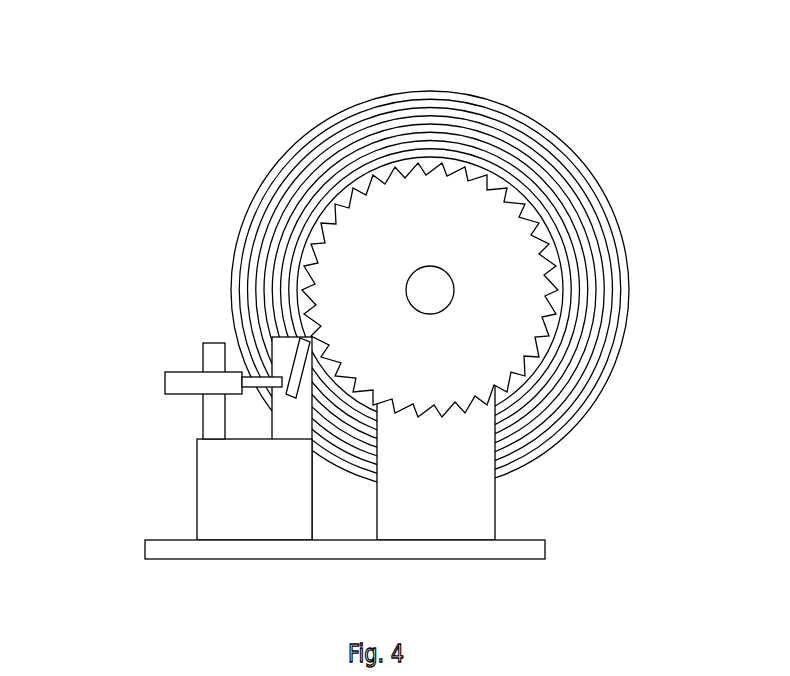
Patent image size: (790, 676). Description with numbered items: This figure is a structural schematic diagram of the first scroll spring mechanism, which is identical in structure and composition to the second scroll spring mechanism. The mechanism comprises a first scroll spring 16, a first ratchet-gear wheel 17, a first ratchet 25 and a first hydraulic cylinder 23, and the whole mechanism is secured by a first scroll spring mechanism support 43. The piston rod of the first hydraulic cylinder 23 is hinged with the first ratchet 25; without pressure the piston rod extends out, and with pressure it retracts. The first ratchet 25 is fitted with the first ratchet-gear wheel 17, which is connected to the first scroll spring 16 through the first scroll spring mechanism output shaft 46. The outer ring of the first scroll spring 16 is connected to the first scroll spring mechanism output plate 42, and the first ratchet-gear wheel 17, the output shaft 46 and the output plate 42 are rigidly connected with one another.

The first scroll spring mechanism output plate 42 is at (310, 116).
The first scroll spring 16 is at (256, 232).
The first ratchet-gear wheel 17 is at (348, 241).
The first scroll spring mechanism output shaft 46 is at (445, 283).
The first ratchet 25 is at (273, 355).
The first hydraulic cylinder 23 is at (177, 373).
The first scroll spring mechanism support 43 is at (394, 510).